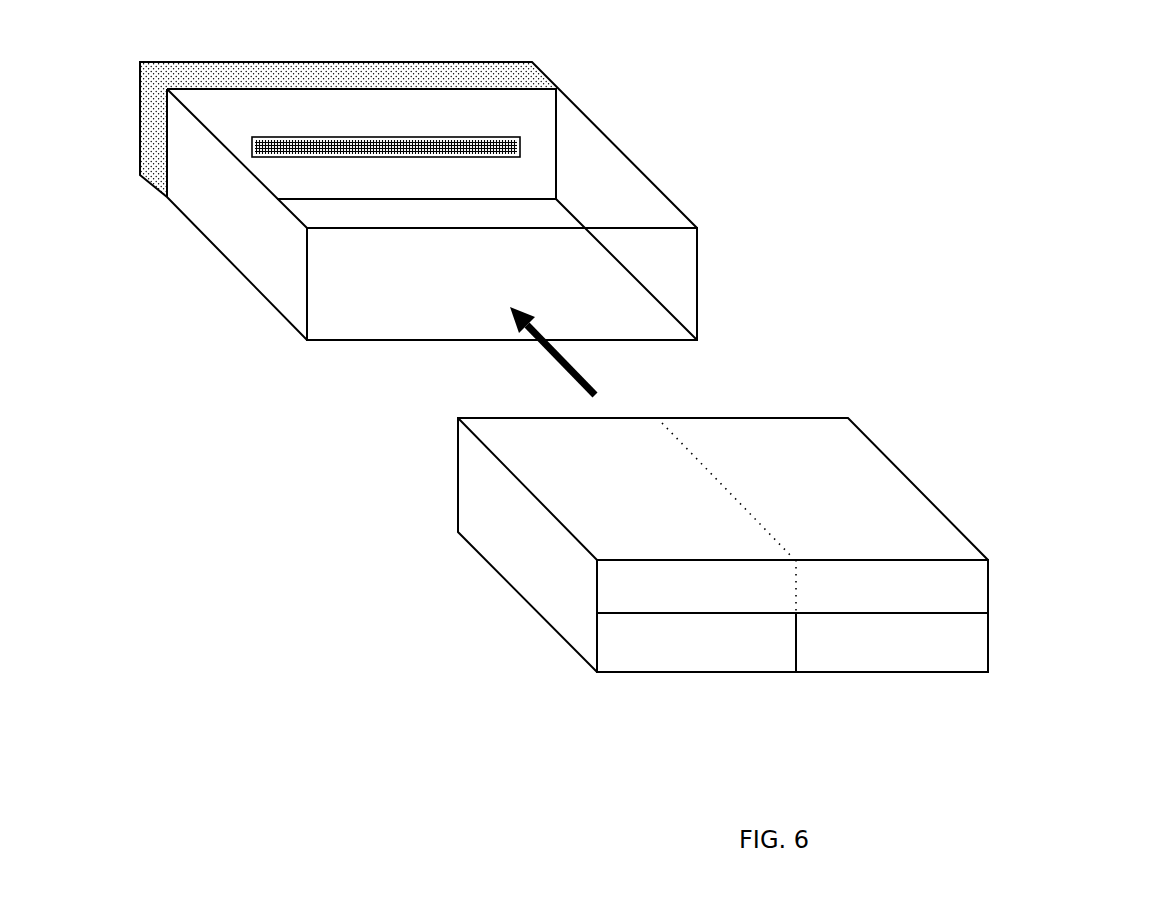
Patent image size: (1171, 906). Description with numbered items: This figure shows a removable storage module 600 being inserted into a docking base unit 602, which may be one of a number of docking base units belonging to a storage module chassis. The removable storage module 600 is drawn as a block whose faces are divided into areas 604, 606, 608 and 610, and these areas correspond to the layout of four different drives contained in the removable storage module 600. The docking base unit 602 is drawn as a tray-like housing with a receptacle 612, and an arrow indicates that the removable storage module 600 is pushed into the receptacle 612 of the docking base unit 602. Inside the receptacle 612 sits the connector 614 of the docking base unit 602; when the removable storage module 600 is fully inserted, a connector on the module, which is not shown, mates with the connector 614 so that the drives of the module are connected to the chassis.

The removable storage module 600 is at (890, 452).
The docking base unit 602 is at (660, 184).
The area 604 is at (608, 589).
The area 606 is at (627, 654).
The area 608 is at (973, 613).
The area 610 is at (953, 655).
The receptacle 612 is at (389, 310).
The connector 614 is at (520, 157).